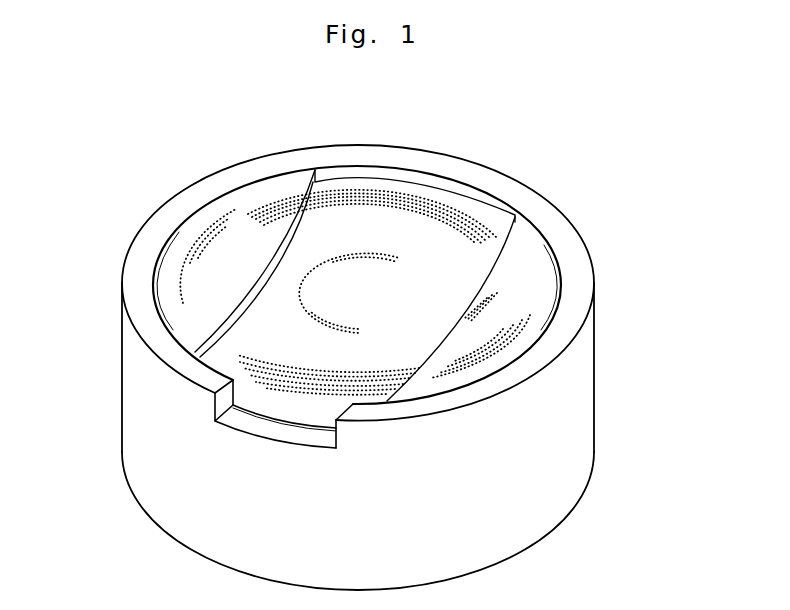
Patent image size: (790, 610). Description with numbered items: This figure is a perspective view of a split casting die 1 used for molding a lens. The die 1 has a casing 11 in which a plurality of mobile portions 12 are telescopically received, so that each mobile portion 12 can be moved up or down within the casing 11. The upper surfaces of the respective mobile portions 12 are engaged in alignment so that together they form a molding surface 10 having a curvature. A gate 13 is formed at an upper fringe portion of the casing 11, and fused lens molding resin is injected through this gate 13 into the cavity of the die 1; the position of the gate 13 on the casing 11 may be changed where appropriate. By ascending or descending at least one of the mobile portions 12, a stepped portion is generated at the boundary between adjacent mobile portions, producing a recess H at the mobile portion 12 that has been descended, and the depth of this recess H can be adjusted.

The casting die 1 is at (525, 178).
The molding surface 10 is at (342, 200).
The casing 11 is at (582, 440).
The mobile portion 12 is at (253, 208).
The gate 13 is at (250, 420).
The recess H is at (452, 238).